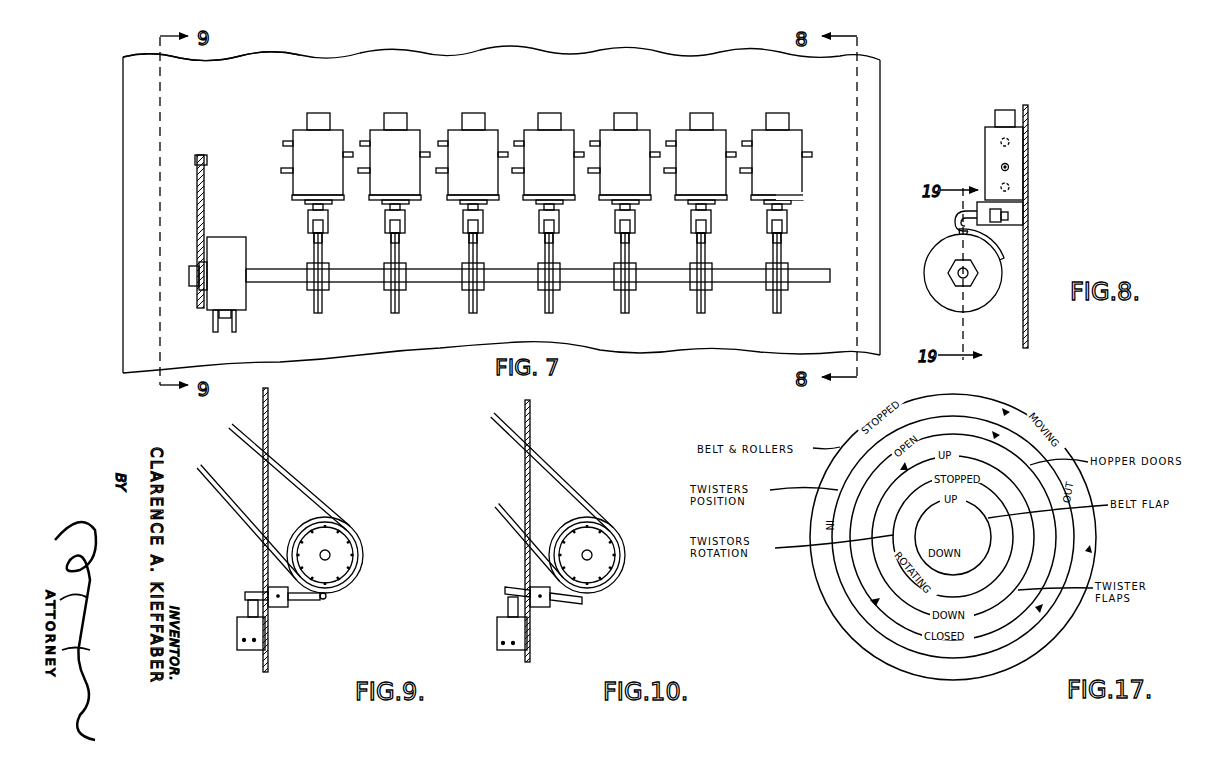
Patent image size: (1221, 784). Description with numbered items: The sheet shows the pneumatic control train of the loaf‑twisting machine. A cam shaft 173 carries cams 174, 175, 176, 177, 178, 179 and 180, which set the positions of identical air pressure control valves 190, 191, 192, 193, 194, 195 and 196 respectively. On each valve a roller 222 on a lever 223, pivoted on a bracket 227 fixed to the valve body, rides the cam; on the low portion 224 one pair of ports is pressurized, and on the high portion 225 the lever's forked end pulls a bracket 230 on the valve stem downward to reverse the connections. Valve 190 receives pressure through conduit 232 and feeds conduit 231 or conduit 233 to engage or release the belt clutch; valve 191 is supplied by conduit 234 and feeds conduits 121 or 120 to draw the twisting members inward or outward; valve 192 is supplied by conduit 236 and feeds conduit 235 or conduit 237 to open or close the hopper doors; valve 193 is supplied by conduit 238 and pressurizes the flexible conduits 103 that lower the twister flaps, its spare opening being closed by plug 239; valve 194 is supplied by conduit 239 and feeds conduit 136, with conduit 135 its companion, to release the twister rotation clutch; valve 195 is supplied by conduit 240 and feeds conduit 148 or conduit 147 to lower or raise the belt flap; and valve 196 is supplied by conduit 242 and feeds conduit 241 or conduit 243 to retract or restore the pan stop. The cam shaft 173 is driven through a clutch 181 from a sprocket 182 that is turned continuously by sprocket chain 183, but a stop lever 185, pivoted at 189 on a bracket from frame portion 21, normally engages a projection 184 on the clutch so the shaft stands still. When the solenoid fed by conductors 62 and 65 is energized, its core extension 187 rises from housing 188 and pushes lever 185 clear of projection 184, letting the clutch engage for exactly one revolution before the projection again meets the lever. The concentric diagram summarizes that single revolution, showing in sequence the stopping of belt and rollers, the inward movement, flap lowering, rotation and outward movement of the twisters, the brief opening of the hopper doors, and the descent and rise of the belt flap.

In FIG. 7, the frame portion 21 is at (265, 65).
In FIG. 8, the frame portion 21 is at (1045, 226).
In FIG. 9, the frame portion 21 is at (290, 428).
In FIG. 10, the frame portion 21 is at (545, 426).
In FIG. 9, the line conductor 62 is at (254, 650).
In FIG. 10, the line conductor 62 is at (513, 652).
In FIG. 9, the conductor 65 is at (244, 650).
In FIG. 10, the conductor 65 is at (503, 652).
In FIG. 7, the flexible compressed air conduit 103 is at (516, 143).
In FIG. 7, the conduit 120 is at (362, 173).
In FIG. 7, the conduit 121 is at (362, 143).
In FIG. 7, the air conduit 135 is at (590, 173).
In FIG. 7, the air conduit 136 is at (592, 143).
In FIG. 7, the conduit 147 is at (668, 173).
In FIG. 7, the conduit 148 is at (668, 143).
In FIG. 7, the cam shaft 173 is at (189, 275).
In FIG. 8, the cam shaft 173 is at (966, 280).
In FIG. 9, the cam shaft 173 is at (331, 557).
In FIG. 10, the cam shaft 173 is at (593, 557).
In FIG. 7, the cam 174 is at (322, 312).
In FIG. 7, the cam 175 is at (398, 308).
In FIG. 7, the cam 176 is at (478, 305).
In FIG. 7, the cam 177 is at (554, 305).
In FIG. 7, the cam 178 is at (628, 305).
In FIG. 7, the cam 179 is at (704, 310).
In FIG. 7, the cam 180 is at (781, 305).
In FIG. 8, the cam 180 is at (950, 295).
In FIG. 7, the clutch 181 is at (247, 258).
In FIG. 9, the clutch 181 is at (360, 540).
In FIG. 10, the clutch 181 is at (622, 540).
In FIG. 9, the sprocket 182 is at (338, 530).
In FIG. 10, the sprocket 182 is at (600, 530).
In FIG. 7, the sprocket chain 183 is at (204, 192).
In FIG. 9, the sprocket chain 183 is at (313, 485).
In FIG. 10, the sprocket chain 183 is at (560, 480).
In FIG. 7, the projection 184 is at (233, 316).
In FIG. 9, the projection 184 is at (328, 596).
In FIG. 10, the projection 184 is at (585, 598).
In FIG. 7, the stop lever 185 is at (224, 325).
In FIG. 9, the stop lever 185 is at (302, 600).
In FIG. 10, the stop lever 185 is at (578, 604).
In FIG. 9, the extension 187 is at (248, 608).
In FIG. 10, the extension 187 is at (508, 606).
In FIG. 9, the housing 188 is at (237, 633).
In FIG. 10, the housing 188 is at (497, 632).
In FIG. 9, the pivot 189 is at (279, 598).
In FIG. 10, the pivot 189 is at (541, 598).
In FIG. 7, the air pressure control valve 190 is at (297, 135).
In FIG. 7, the air pressure control valve 191 is at (393, 150).
In FIG. 7, the air pressure control valve 192 is at (473, 150).
In FIG. 7, the air pressure control valve 193 is at (549, 150).
In FIG. 7, the air pressure control valve 194 is at (624, 150).
In FIG. 7, the air pressure control valve 195 is at (703, 150).
In FIG. 7, the air pressure control valve 196 is at (785, 135).
In FIG. 7, the roller 222 is at (391, 237).
In FIG. 8, the roller 222 is at (958, 228).
In FIG. 7, the lever 223 is at (783, 226).
In FIG. 8, the lever 223 is at (953, 215).
In FIG. 8, the low portion 224 is at (940, 243).
In FIG. 8, the high portion 225 is at (1000, 247).
In FIG. 7, the bracket 227 is at (800, 198).
In FIG. 8, the bracket 227 is at (978, 203).
In FIG. 8, the bracket 230 is at (1003, 226).
In FIG. 7, the conduit 231 is at (281, 172).
In FIG. 7, the conduit 232 is at (348, 152).
In FIG. 7, the conduit 233 is at (283, 143).
In FIG. 7, the conduit 234 is at (425, 152).
In FIG. 7, the conduit 235 is at (440, 143).
In FIG. 7, the conduit 236 is at (503, 152).
In FIG. 7, the conduit 237 is at (440, 173).
In FIG. 7, the air pressure conduit 238 is at (578, 152).
In FIG. 7, the air pressure conduit 239 is at (516, 173).
In FIG. 7, the air pressure conduit 240 is at (730, 152).
In FIG. 7, the conduit 241 is at (744, 143).
In FIG. 8, the conduit 241 is at (1012, 140).
In FIG. 7, the air pressure conduit 242 is at (807, 157).
In FIG. 8, the air pressure conduit 242 is at (1010, 165).
In FIG. 7, the conduit 243 is at (744, 173).
In FIG. 8, the conduit 243 is at (1012, 187).